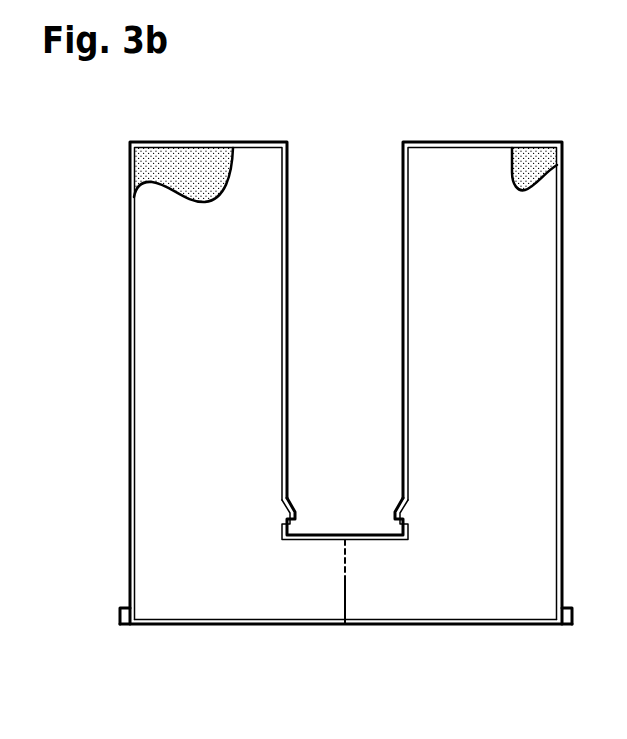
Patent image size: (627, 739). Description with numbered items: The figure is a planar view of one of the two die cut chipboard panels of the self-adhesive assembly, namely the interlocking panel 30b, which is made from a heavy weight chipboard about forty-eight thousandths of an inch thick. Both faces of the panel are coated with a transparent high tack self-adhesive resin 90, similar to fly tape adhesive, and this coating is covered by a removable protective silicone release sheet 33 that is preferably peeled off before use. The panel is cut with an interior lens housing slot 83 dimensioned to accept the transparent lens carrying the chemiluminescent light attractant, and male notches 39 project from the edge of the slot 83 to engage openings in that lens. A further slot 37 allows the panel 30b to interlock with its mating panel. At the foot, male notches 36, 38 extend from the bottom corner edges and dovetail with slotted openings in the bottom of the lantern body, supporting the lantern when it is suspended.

The protective silicone release sheet 33 is at (197, 322).
The slot 83 is at (400, 363).
The male notches 39 is at (283, 512).
The self-adhesive resin 90 is at (533, 160).
The male notch 36 is at (119, 617).
The male notch 38 is at (572, 617).
The interlocking panel 30b is at (345, 547).
The slot 37 is at (345, 587).